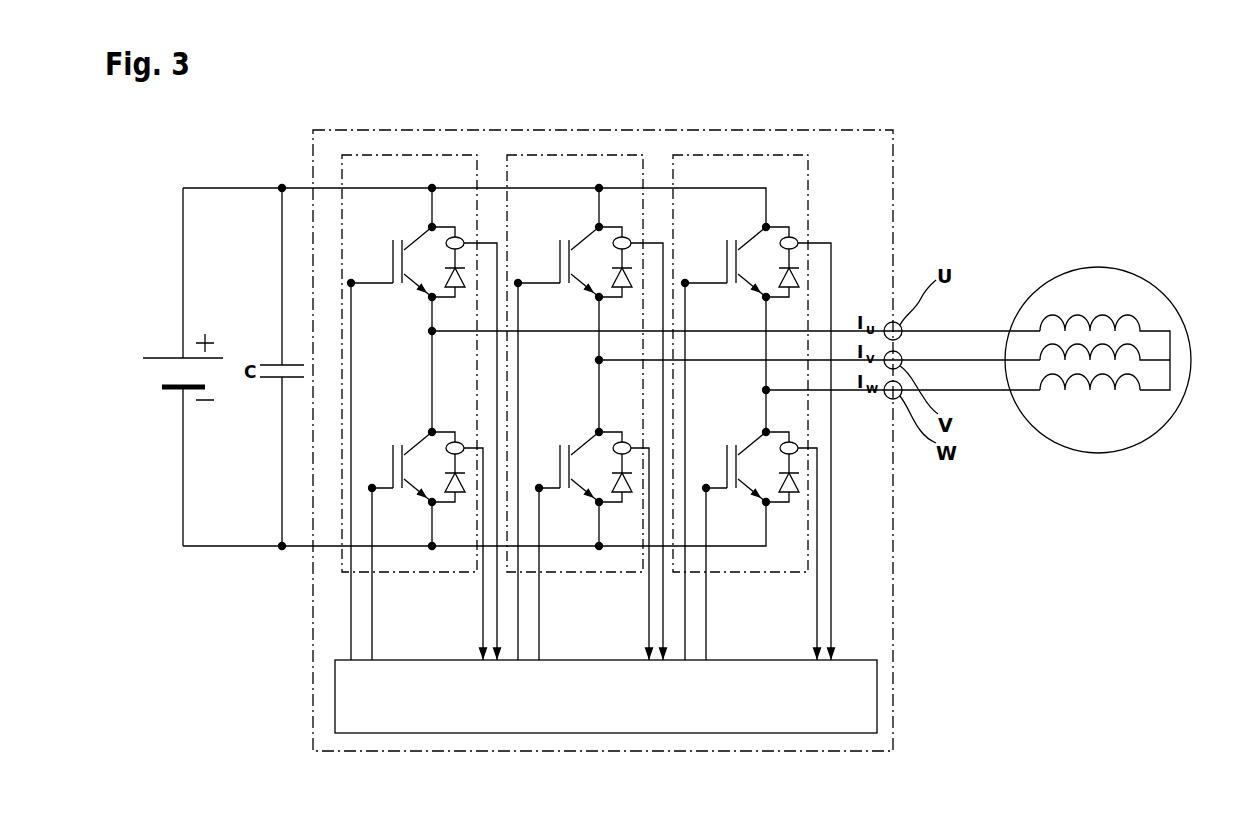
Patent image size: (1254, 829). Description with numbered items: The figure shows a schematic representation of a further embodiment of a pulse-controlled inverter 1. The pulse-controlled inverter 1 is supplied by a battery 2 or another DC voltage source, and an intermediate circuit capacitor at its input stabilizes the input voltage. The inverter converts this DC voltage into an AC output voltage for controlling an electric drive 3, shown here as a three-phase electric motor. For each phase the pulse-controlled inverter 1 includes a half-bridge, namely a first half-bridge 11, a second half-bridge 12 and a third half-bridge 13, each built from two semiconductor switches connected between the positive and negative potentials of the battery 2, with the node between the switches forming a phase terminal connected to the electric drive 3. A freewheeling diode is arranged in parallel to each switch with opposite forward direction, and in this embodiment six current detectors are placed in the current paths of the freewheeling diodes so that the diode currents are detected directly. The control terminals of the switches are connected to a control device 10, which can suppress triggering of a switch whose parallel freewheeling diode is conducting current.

The pulse-controlled inverter 1 is at (893, 158).
The battery 2 is at (143, 358).
The electric drive 3 is at (1170, 302).
The control device 10 is at (877, 697).
The first half-bridge 11 is at (400, 154).
The second half-bridge 12 is at (567, 154).
The third half-bridge 13 is at (735, 154).